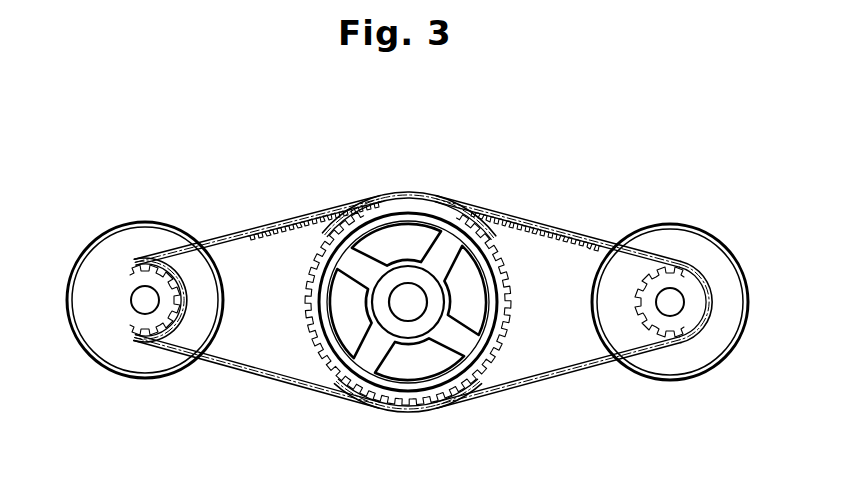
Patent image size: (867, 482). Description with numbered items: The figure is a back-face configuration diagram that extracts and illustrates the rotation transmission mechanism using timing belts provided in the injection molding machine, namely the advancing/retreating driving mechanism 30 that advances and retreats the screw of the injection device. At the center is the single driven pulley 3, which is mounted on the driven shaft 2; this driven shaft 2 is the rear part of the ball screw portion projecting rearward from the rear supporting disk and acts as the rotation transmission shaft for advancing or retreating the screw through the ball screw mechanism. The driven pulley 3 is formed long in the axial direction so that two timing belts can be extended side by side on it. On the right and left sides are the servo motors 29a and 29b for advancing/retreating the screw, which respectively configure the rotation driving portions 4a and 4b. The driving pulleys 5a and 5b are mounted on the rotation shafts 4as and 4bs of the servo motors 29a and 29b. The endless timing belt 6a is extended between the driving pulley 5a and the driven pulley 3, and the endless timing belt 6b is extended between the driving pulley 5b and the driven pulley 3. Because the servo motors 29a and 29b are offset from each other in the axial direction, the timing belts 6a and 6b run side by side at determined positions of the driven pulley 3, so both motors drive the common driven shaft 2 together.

The advancing/retreating driving mechanism 30 is at (544, 144).
The driven shaft 2 is at (410, 322).
The driven pulley 3 is at (500, 352).
The rotation driving portion 4a is at (650, 215).
The rotation driving portion 4b is at (185, 208).
The rotation shaft 4as is at (677, 316).
The rotation shaft 4bs is at (134, 316).
The driving pulley 5a is at (639, 304).
The driving pulley 5b is at (176, 308).
The timing belt 6a is at (517, 208).
The timing belt 6b is at (277, 208).
The servo motor 29a is at (700, 227).
The servo motor 29b is at (116, 226).